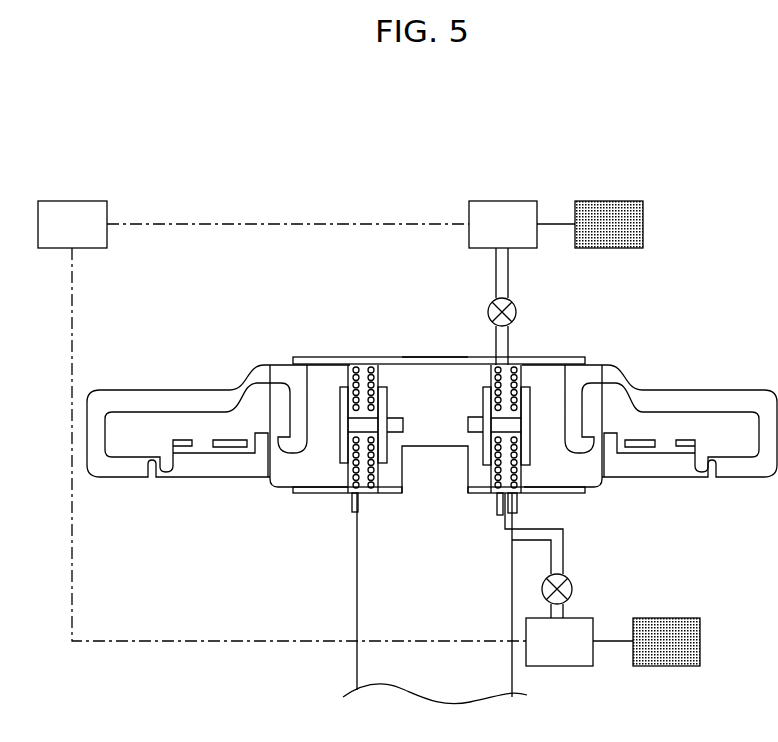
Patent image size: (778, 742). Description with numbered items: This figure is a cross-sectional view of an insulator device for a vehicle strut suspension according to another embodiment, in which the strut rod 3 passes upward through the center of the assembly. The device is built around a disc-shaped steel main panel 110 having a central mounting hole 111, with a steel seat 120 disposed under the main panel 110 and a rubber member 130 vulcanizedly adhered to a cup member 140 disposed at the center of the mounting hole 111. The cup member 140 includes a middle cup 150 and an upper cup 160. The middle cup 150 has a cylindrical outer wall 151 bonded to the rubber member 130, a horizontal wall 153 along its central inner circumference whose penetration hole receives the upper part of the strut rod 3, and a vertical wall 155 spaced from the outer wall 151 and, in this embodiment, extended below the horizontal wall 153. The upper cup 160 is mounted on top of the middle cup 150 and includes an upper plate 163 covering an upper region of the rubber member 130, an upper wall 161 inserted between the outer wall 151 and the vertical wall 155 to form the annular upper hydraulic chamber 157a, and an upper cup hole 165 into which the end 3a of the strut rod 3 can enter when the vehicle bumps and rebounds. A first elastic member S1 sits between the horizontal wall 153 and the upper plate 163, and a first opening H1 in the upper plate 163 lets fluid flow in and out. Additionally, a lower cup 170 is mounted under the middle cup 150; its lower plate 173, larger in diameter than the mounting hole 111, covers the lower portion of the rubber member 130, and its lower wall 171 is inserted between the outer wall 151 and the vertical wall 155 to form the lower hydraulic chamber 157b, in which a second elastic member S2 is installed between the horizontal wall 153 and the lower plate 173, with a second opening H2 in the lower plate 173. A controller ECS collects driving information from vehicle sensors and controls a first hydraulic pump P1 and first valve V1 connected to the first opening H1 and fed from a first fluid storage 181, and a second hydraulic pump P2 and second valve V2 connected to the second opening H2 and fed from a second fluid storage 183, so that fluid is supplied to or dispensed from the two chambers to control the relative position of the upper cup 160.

The strut rod 3 is at (377, 610).
The end of the strut rod 3a is at (437, 446).
The main panel 110 is at (172, 402).
The mounting hole 111 is at (560, 372).
The steel seat 120 is at (708, 470).
The rubber member 130 is at (122, 395).
The cup member 140 is at (152, 527).
The middle cup 150 is at (318, 417).
The outer wall 151 is at (345, 395).
The horizontal wall 153 is at (350, 420).
The vertical wall 155 is at (390, 400).
The upper hydraulic chamber 157a is at (509, 362).
The lower hydraulic chamber 157b is at (515, 510).
The upper cup 160 is at (290, 356).
The upper wall 161 is at (375, 377).
The upper plate 163 is at (556, 356).
The upper cup hole 165 is at (440, 356).
The lower cup 170 is at (584, 496).
The lower wall 171 is at (378, 475).
The lower plate 173 is at (480, 497).
The first fluid storage 181 is at (625, 200).
The second fluid storage 183 is at (685, 668).
The controller ECS is at (282, 421).
The first hydraulic pump P1 is at (522, 224).
The second hydraulic pump P2 is at (579, 642).
The first valve V1 is at (487, 307).
The second valve V2 is at (575, 590).
The first opening H1 is at (499, 356).
The second opening H2 is at (497, 500).
The first elastic member S1 is at (355, 365).
The second elastic member S2 is at (355, 497).